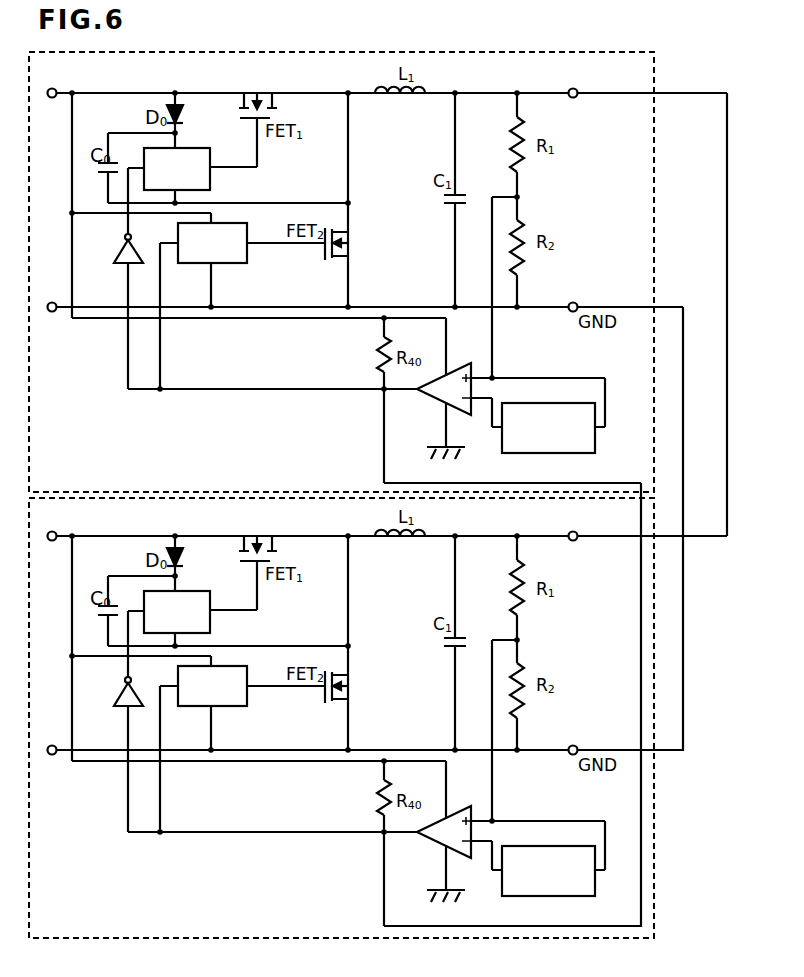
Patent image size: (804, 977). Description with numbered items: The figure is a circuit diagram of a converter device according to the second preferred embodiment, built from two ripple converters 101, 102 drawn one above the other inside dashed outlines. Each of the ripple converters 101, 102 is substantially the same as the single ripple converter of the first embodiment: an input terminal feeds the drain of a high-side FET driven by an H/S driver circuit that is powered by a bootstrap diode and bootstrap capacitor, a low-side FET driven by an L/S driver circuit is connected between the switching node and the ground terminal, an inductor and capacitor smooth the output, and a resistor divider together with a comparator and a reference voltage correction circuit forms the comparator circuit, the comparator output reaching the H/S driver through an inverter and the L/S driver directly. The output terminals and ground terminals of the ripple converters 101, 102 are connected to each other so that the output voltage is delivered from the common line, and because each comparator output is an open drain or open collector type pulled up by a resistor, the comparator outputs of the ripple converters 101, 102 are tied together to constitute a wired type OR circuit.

The ripple converter 101 is at (583, 44).
The ripple converter 102 is at (573, 938).